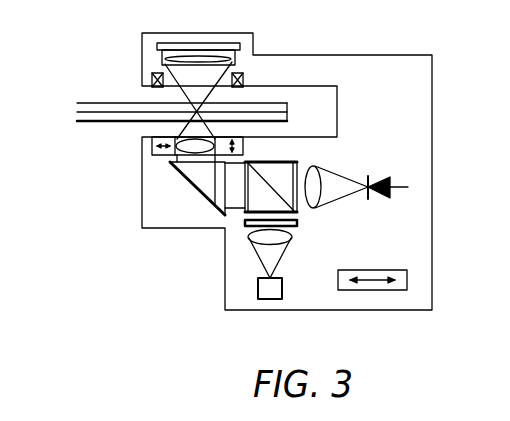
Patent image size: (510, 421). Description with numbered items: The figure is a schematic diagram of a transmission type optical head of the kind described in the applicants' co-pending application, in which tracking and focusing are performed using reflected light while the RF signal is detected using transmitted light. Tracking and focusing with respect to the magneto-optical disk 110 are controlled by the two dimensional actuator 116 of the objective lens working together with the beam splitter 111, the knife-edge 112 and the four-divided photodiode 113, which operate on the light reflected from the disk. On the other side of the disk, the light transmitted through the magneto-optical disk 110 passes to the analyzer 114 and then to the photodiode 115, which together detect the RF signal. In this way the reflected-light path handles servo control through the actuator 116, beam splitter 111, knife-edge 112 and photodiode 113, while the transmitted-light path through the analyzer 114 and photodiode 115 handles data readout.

The magneto-optical disk 110 is at (93, 103).
The beam splitter 111 is at (290, 161).
The knife-edge 112 is at (297, 223).
The 4-divided photodiode 113 is at (284, 288).
The analyzer 114 is at (236, 58).
The photodiode 115 is at (240, 46).
The two dimensional actuator 116 is at (151, 157).